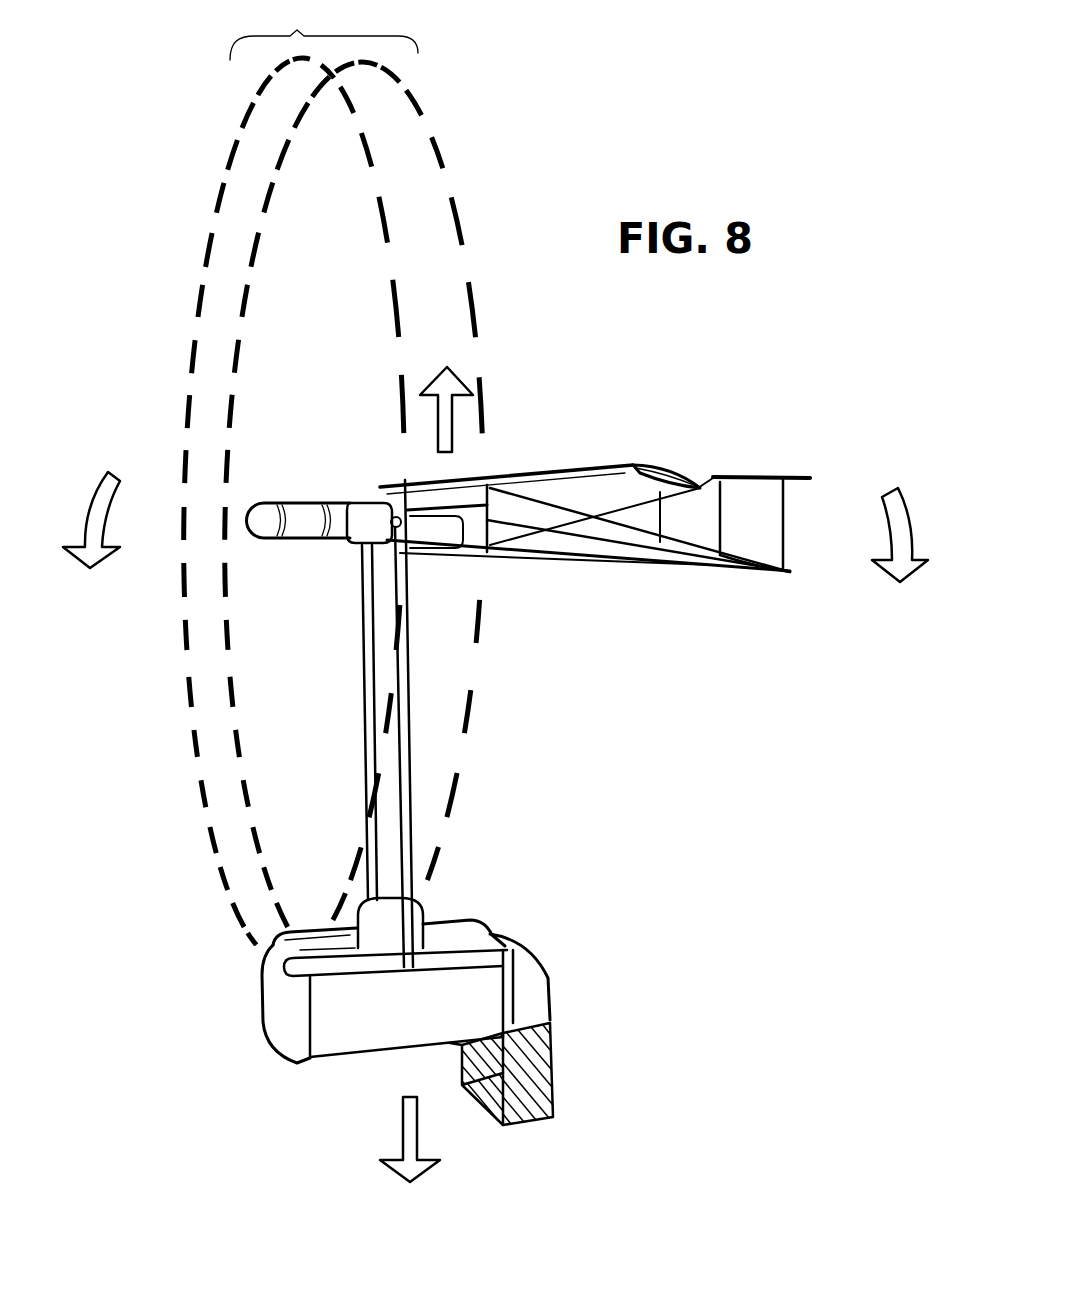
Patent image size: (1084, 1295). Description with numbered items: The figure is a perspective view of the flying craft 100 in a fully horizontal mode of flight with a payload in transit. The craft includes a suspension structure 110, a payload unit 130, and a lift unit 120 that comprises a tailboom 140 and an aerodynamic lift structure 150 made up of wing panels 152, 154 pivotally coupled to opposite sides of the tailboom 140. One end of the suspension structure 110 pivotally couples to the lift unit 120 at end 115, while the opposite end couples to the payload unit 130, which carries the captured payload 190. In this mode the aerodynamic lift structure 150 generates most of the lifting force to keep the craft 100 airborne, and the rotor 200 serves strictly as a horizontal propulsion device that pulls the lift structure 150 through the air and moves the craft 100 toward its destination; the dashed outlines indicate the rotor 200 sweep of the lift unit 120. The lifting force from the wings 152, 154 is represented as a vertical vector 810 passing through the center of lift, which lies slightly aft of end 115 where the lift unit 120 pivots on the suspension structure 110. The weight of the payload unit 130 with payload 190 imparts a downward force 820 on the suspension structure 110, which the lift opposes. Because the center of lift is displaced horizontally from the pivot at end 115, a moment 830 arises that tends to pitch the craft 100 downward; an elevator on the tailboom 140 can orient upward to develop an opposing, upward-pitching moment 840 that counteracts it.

The flying craft 100 is at (750, 760).
The suspension structure 110 is at (424, 734).
The end of suspension structure 115 is at (377, 503).
The lift unit 120 is at (492, 92).
The payload unit 130 is at (244, 1015).
The tailboom 140 is at (788, 452).
The aerodynamic lift structure 150 is at (579, 452).
The wing panel 152 is at (658, 463).
The wing panel 154 is at (316, 489).
The payload 190 is at (366, 1062).
The rotor 200 is at (300, 34).
The vertical vector 810 is at (453, 420).
The downward force 820 is at (401, 1130).
The moment 830 is at (93, 503).
The upward-pitching moment 840 is at (907, 515).